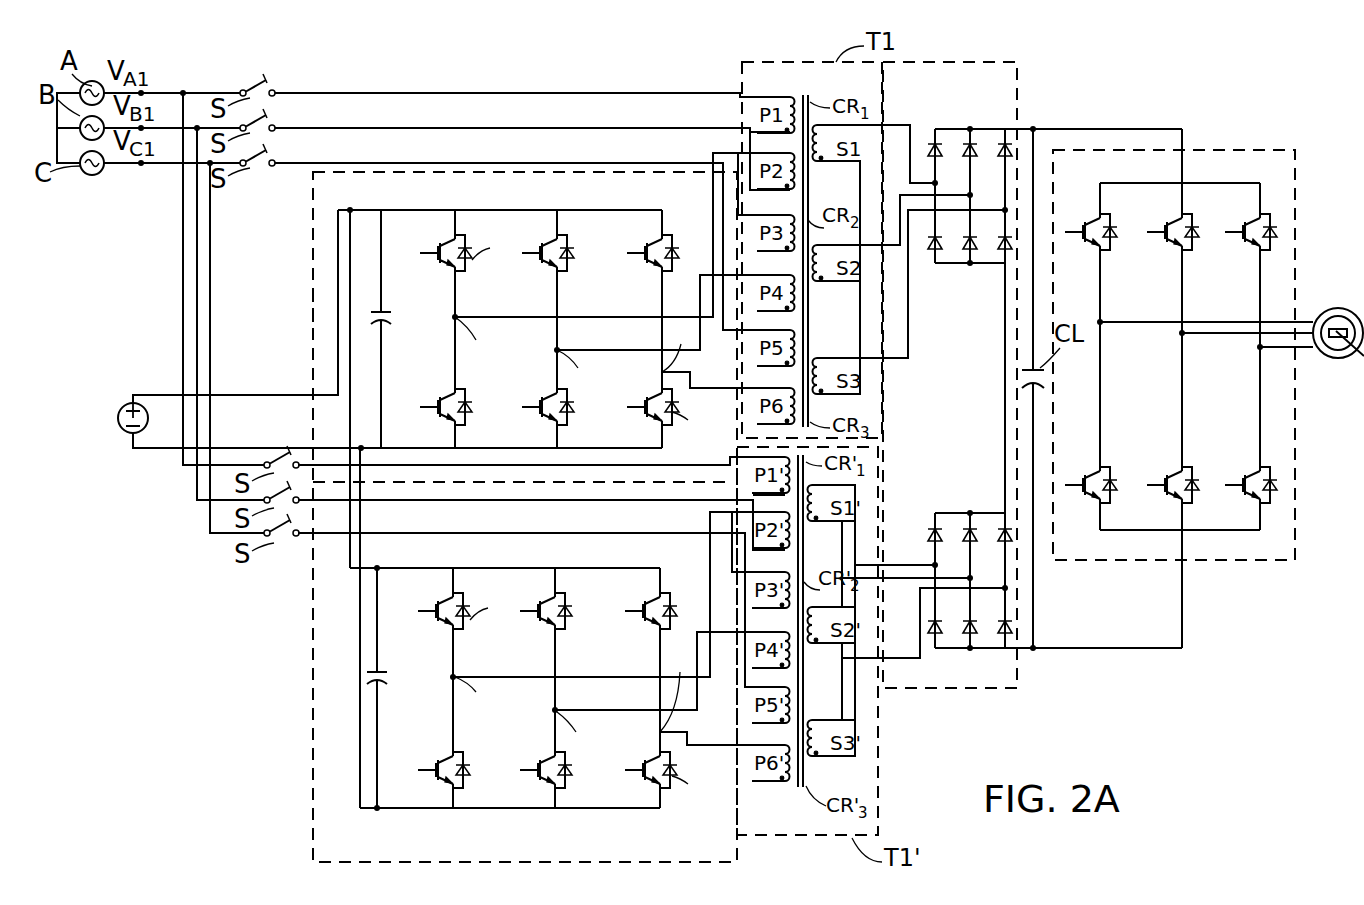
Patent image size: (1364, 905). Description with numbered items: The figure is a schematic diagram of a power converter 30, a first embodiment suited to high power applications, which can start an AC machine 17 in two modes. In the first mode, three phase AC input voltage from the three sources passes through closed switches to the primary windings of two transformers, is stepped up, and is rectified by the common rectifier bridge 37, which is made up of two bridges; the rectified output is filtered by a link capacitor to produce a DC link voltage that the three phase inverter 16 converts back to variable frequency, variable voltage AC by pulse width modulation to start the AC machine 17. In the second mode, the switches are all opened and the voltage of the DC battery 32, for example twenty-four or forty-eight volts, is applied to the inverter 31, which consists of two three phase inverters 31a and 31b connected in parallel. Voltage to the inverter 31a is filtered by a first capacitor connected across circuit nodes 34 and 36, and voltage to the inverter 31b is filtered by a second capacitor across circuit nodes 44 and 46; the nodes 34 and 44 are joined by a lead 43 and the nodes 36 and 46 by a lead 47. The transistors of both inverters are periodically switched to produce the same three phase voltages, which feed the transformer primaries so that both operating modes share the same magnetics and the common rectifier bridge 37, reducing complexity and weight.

The three phase inverter 16 is at (1240, 150).
The AC machine 17 is at (1333, 312).
The power converter 30 is at (1196, 61).
The inverter 31 is at (312, 690).
The three phase inverter 31a is at (532, 203).
The three phase inverter 31b is at (532, 561).
The DC battery 32 is at (126, 402).
The circuit node 34 is at (350, 210).
The circuit node 36 is at (455, 448).
The common rectifier bridge 37 is at (975, 64).
The lead 43 is at (312, 318).
The circuit node 44 is at (377, 568).
The circuit node 46 is at (453, 808).
The lead 47 is at (360, 630).